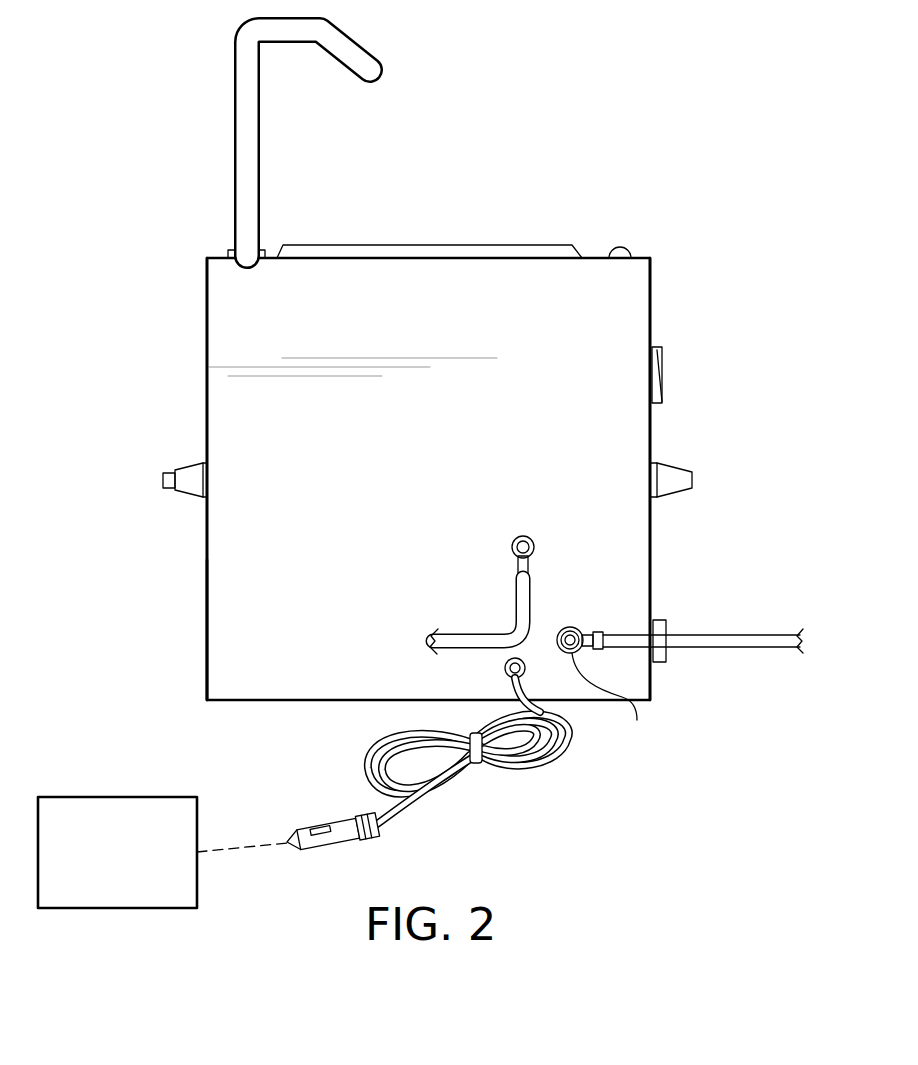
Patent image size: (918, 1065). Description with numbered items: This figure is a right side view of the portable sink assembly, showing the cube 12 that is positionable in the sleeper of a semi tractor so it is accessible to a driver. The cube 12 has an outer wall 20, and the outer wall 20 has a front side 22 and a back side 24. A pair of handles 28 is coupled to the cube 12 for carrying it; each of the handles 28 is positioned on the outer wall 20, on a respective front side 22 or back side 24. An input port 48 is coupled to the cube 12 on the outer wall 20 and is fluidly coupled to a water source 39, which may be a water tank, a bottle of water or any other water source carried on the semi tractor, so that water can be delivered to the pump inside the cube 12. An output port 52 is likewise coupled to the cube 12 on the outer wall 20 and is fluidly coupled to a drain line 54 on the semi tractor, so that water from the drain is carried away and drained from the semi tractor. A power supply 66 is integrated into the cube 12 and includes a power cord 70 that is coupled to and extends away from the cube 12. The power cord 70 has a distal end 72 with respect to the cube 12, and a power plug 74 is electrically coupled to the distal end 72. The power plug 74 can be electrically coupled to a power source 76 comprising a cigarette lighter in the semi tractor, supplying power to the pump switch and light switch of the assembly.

The cube 12 is at (672, 210).
The outer wall 20 is at (218, 283).
The front side 22 is at (708, 412).
The back side 24 is at (207, 605).
The handles 28 is at (175, 475).
The output port 52 is at (520, 537).
The drain line 54 is at (457, 638).
The input port 48 is at (637, 742).
The water source 39 is at (716, 698).
The power supply 66 is at (560, 835).
The power cord 70 is at (483, 818).
The distal end 72 is at (407, 872).
The power plug 74 is at (290, 905).
The power source 76 is at (101, 797).